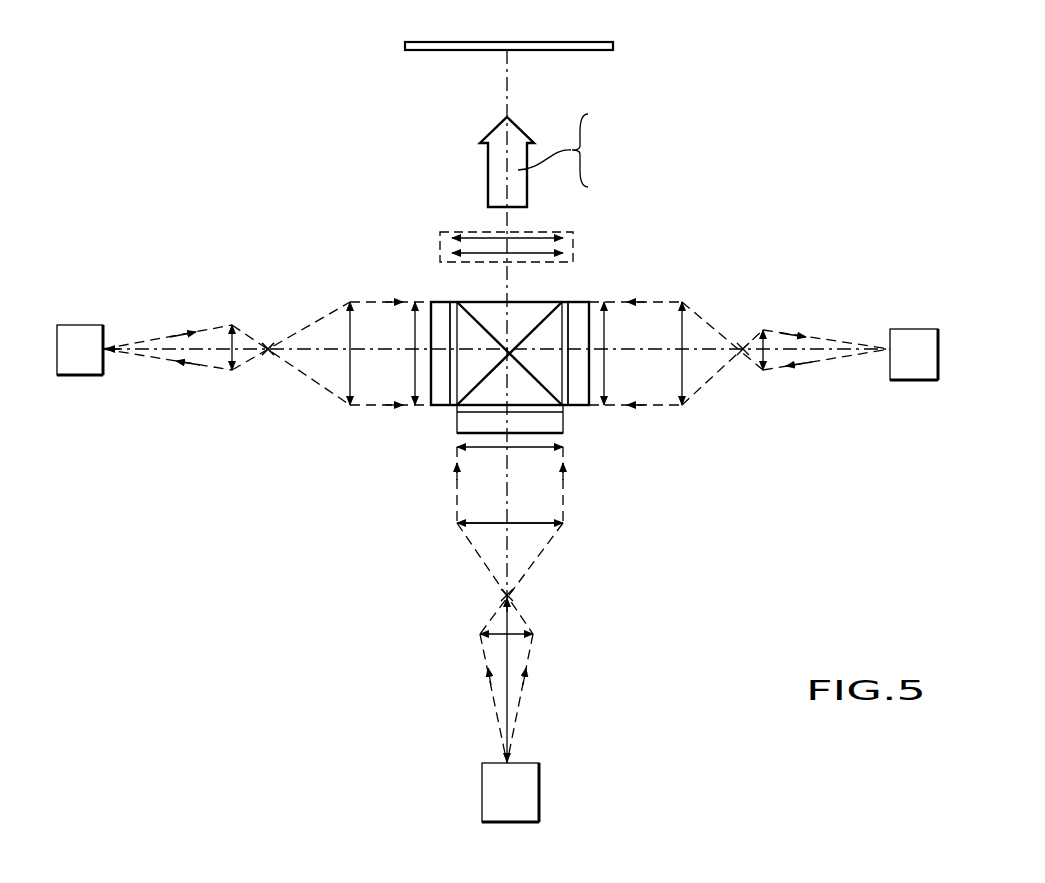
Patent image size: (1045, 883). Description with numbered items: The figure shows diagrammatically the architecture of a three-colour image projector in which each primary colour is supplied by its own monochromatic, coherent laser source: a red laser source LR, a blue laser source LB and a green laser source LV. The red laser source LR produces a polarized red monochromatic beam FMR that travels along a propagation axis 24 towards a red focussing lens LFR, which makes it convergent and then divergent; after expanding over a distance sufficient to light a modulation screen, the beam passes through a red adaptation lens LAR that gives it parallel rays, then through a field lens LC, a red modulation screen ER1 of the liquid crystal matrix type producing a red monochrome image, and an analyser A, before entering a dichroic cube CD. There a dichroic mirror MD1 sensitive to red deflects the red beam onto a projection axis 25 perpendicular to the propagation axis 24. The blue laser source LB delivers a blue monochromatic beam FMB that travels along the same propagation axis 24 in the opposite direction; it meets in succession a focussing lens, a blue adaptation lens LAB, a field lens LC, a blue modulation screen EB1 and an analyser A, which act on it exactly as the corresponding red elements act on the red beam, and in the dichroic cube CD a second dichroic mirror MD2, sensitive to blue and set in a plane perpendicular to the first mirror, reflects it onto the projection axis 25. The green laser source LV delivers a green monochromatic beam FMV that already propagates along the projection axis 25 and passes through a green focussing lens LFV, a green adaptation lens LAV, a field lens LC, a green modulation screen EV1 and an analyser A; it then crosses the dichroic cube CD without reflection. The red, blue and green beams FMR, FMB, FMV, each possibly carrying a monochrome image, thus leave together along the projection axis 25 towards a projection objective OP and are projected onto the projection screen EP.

The projection screen EP is at (598, 42).
The projection axis 25 is at (505, 97).
The red monochromatic beam FMR is at (130, 380).
The blue monochromatic beam FMB is at (793, 333).
The green monochromatic beam FMV is at (480, 728).
The projection objective OP is at (465, 232).
The dichroic mirror MD1 is at (540, 305).
The second dichroic mirror MD2 is at (457, 305).
The dichroic cube CD is at (490, 318).
The analyser A is at (565, 303).
The red modulation screen ER1 is at (433, 407).
The blue modulation screen EB1 is at (578, 412).
The green modulation screen EV1 is at (565, 425).
The field lens LC is at (415, 372).
The red adaptation lens LAR is at (340, 330).
The blue adaptation lens LAB is at (692, 392).
The green adaptation lens LAV is at (488, 527).
The red focussing lens LFR is at (218, 365).
The green focussing lens LFV is at (493, 632).
The propagation axis 24 is at (290, 352).
The red laser source LR is at (88, 332).
The blue laser source LB is at (910, 333).
The green laser source LV is at (516, 785).